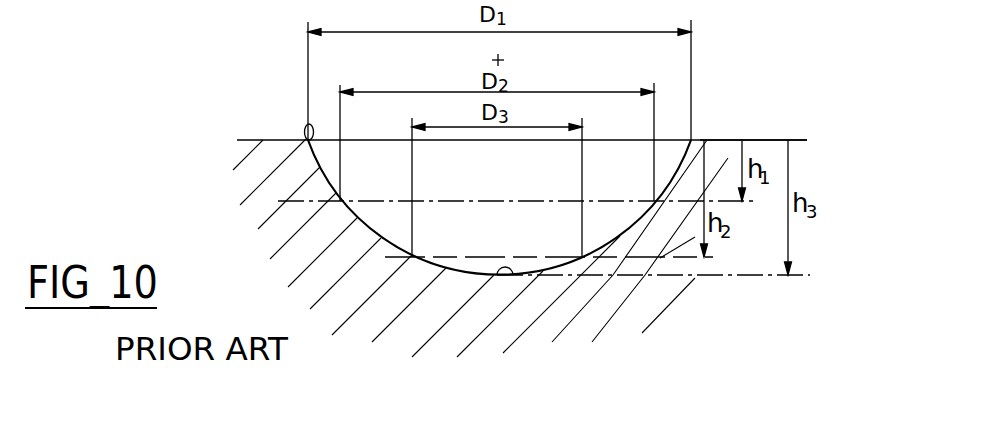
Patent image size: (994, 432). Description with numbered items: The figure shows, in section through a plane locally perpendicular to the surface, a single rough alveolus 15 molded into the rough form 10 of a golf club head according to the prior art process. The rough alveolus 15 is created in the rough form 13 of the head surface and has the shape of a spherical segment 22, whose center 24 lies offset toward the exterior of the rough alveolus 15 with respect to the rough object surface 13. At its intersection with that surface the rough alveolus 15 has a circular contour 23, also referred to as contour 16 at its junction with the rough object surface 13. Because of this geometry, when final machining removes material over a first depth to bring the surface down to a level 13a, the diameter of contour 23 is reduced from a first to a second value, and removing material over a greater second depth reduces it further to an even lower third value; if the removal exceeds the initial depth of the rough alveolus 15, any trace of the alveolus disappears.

The rough form of the golf club head 10 is at (295, 235).
The rough form of the surface 13 is at (252, 138).
The level 13a is at (300, 198).
The rough alveolus 15 is at (663, 147).
The contour 16 is at (723, 135).
The spherical segment 22 is at (516, 276).
The circular contour 23 is at (305, 124).
The center of the sphere 24 is at (503, 56).